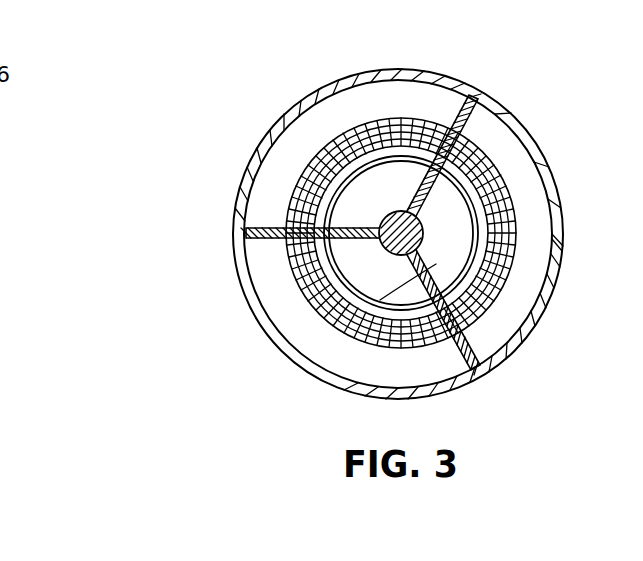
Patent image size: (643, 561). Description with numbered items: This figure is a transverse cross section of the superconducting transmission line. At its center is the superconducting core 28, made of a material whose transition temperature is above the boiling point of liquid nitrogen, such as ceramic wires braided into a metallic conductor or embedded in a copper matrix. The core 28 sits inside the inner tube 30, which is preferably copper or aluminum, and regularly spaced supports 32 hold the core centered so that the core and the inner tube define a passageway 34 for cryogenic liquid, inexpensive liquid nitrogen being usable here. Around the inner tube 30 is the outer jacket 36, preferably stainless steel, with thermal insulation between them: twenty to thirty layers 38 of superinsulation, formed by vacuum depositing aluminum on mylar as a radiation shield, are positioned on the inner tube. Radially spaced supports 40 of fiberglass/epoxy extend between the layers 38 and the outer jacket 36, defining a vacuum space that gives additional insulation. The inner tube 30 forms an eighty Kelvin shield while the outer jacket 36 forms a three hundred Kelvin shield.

The superconducting core 28 is at (420, 226).
The inner tube 30 is at (463, 185).
The supports 32 is at (353, 335).
The passageway 34 is at (357, 262).
The outer jacket 36 is at (505, 102).
The layers 38 is at (322, 306).
The radially spaced supports 40 is at (458, 115).